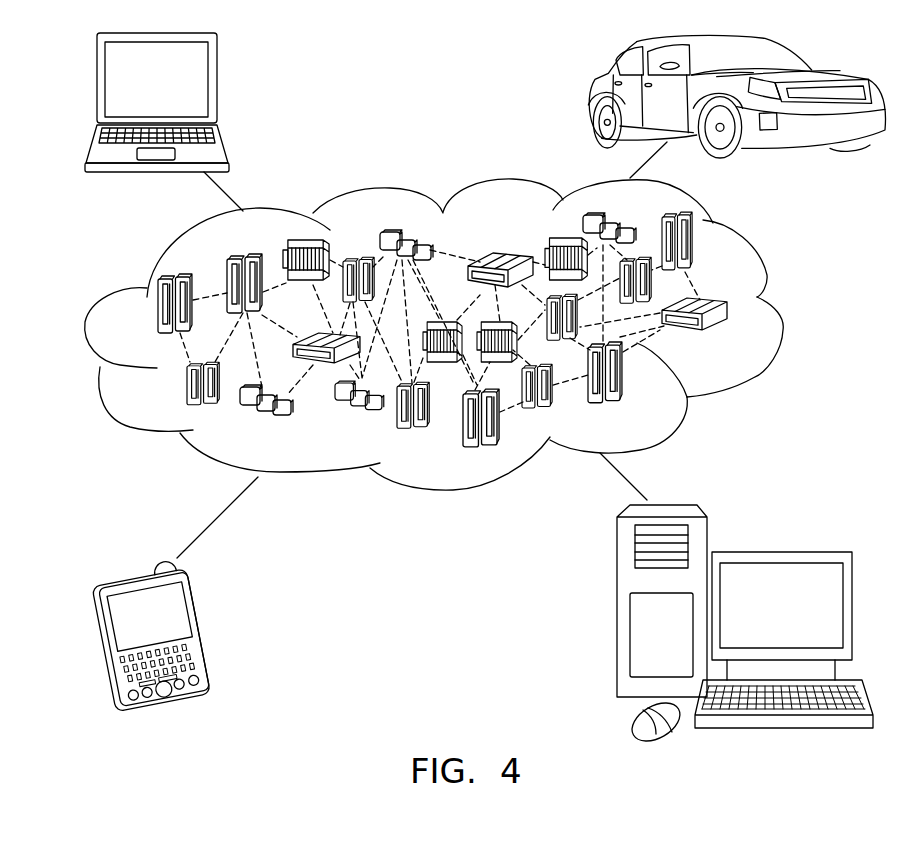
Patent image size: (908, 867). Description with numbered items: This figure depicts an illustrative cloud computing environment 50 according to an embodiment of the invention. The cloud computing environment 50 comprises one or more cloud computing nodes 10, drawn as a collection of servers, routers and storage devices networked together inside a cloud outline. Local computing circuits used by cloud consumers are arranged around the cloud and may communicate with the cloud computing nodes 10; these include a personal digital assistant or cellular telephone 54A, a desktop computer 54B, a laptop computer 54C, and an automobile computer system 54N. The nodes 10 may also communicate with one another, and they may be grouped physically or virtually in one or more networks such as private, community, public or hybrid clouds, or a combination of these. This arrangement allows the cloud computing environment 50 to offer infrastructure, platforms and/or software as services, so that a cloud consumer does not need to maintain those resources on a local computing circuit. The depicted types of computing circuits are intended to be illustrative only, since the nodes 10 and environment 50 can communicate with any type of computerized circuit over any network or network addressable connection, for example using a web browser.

The laptop computer 54C is at (217, 84).
The automobile computer system 54N is at (590, 98).
The personal digital assistant or cellular telephone 54A is at (208, 629).
The desktop computer 54B is at (780, 550).
The cloud computing environment 50 is at (780, 313).
The cloud computing node 10 is at (731, 338).